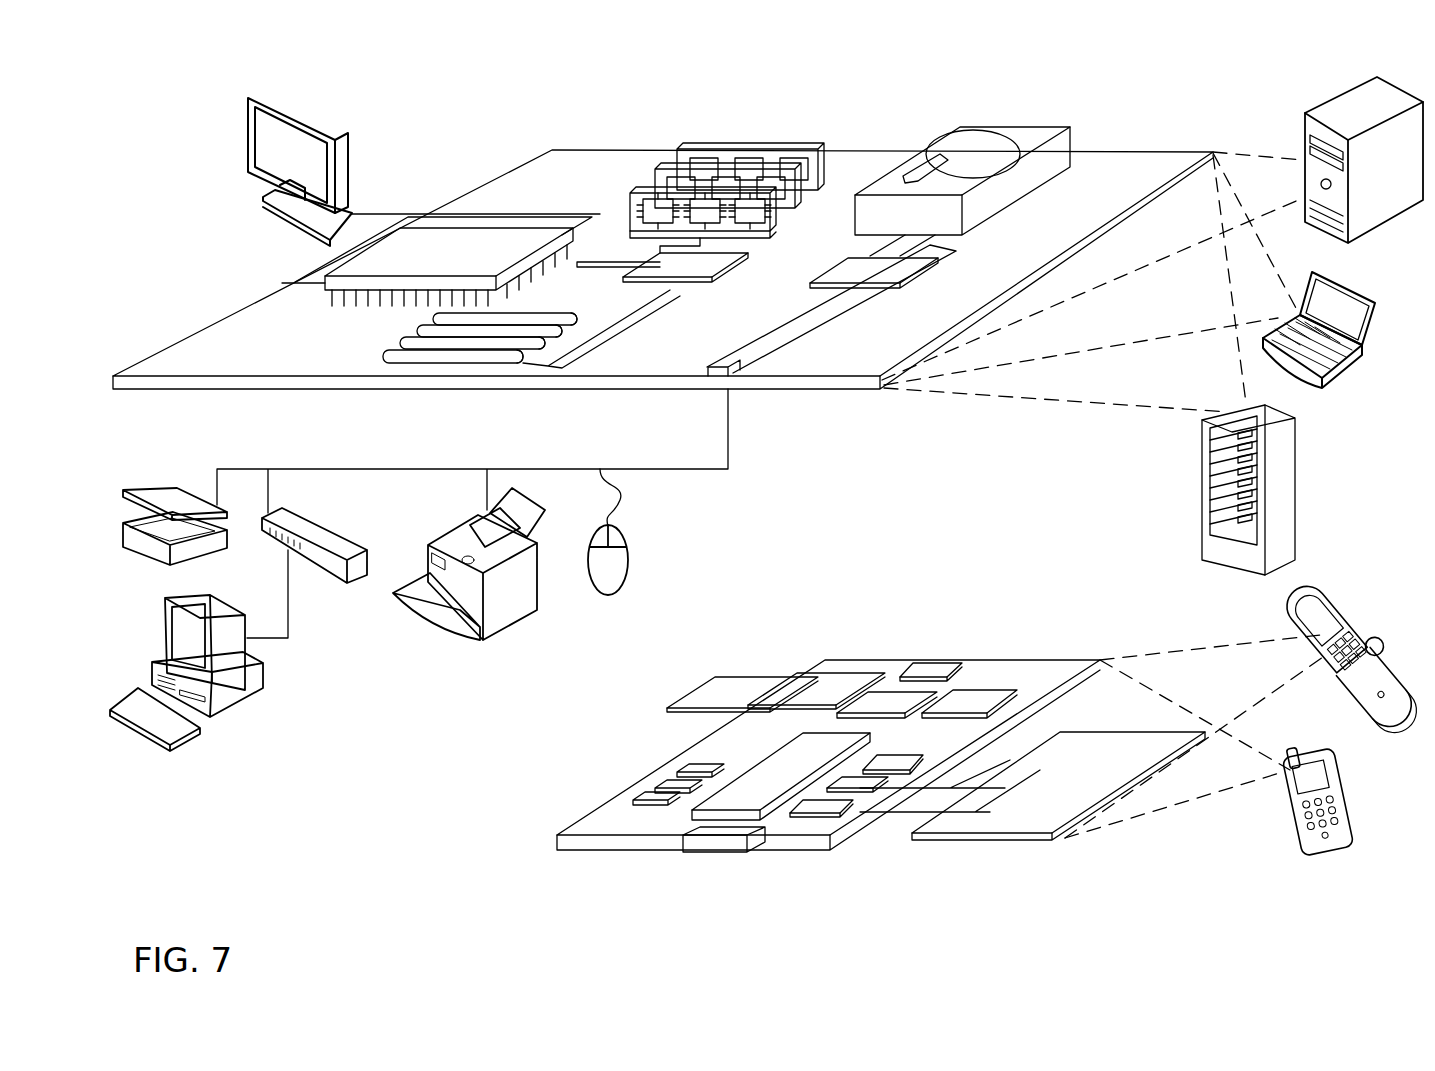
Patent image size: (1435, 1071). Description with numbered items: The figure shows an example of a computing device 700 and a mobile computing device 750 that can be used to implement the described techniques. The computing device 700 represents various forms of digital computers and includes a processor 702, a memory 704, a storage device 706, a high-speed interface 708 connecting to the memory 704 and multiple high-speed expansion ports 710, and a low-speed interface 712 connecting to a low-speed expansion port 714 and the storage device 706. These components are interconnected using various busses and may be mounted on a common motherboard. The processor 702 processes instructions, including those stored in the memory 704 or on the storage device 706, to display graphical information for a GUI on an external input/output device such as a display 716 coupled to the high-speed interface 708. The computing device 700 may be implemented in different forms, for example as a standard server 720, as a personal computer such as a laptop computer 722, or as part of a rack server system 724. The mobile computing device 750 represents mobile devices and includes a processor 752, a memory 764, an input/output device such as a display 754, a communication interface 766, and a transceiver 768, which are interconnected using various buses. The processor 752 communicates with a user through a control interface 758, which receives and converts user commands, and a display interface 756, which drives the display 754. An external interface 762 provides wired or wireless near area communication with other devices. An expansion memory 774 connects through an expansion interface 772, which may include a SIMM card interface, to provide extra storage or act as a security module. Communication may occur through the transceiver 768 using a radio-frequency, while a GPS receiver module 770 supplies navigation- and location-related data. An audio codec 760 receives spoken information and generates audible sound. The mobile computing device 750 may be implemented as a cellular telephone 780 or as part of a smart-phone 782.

The computing device 700 is at (466, 118).
The processor 702 is at (282, 283).
The memory 704 is at (697, 143).
The storage device 706 is at (956, 131).
The high-speed interface 708 is at (657, 262).
The high-speed expansion ports 710 is at (390, 352).
The low-speed interface 712 is at (850, 265).
The low-speed expansion port 714 is at (738, 380).
The display 716 is at (254, 97).
The standard server 720 is at (1304, 137).
The laptop computer 722 is at (1364, 300).
The rack server system 724 is at (1200, 516).
The mobile computing device 750 is at (528, 845).
The processor 752 is at (752, 800).
The display 754 is at (1015, 825).
The display interface 756 is at (825, 810).
The control interface 758 is at (863, 783).
The audio codec 760 is at (893, 762).
The external interface 762 is at (715, 838).
The memory 764 is at (650, 793).
The communication interface 766 is at (883, 700).
The transceiver 768 is at (970, 698).
The GPS receiver module 770 is at (940, 658).
The expansion interface 772 is at (807, 672).
The expansion memory 774 is at (718, 675).
The cellular telephone 780 is at (1350, 640).
The smart-phone 782 is at (1292, 800).